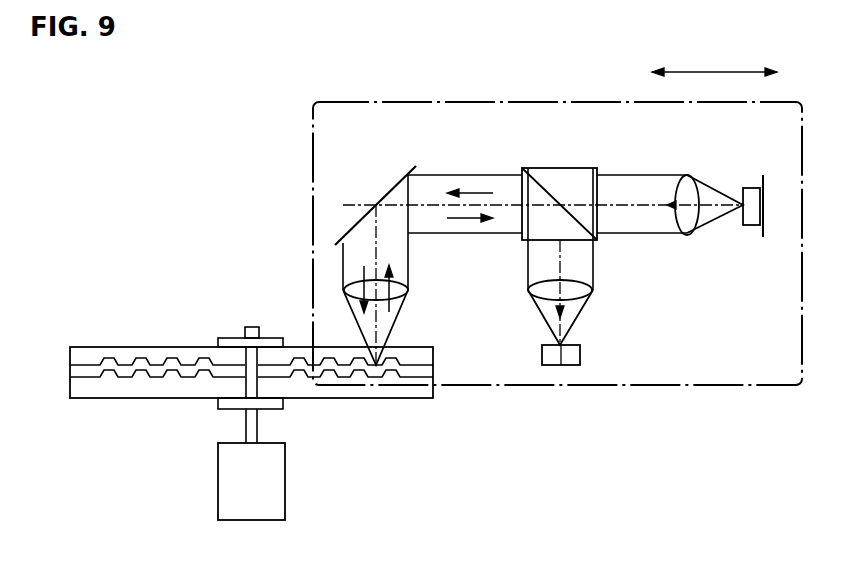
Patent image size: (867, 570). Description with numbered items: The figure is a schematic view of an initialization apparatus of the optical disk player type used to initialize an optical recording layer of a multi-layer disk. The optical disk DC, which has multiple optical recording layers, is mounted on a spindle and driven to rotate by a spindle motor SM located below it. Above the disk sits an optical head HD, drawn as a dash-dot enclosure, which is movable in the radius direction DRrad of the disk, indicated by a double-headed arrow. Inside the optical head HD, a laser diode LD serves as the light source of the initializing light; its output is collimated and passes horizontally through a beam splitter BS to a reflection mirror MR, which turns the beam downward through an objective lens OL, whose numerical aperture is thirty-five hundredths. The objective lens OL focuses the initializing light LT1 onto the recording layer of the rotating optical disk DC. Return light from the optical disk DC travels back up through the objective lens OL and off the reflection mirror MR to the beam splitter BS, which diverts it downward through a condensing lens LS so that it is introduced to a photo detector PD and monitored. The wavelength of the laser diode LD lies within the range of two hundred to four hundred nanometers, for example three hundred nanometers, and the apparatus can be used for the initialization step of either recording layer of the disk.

The optical head HD is at (425, 102).
The radius direction DRrad is at (714, 64).
The reflection mirror MR is at (380, 198).
The beam splitter BS is at (560, 168).
The laser diode LD is at (748, 188).
The condensing lens LS is at (580, 288).
The photo detector PD is at (580, 355).
The objective lens OL is at (410, 288).
The initializing light LT1 is at (395, 320).
The optical disk DC is at (142, 334).
The spindle motor SM is at (285, 485).